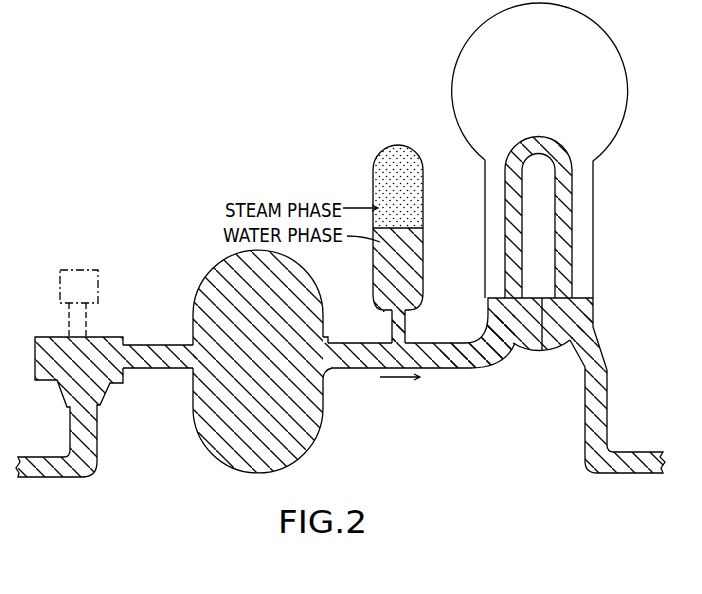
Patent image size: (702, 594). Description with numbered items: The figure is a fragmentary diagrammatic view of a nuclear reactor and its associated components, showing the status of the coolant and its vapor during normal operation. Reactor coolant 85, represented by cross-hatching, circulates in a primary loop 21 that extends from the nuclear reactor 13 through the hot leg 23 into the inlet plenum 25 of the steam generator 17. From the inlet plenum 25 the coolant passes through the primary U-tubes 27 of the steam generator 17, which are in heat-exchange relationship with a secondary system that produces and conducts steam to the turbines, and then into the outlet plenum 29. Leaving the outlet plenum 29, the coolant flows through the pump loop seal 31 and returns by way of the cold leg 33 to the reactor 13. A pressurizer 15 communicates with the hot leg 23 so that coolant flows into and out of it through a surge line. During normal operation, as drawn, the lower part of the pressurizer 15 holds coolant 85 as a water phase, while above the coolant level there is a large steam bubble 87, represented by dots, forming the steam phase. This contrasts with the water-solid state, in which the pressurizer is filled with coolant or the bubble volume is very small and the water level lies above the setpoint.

The nuclear reactor 13 is at (310, 283).
The pressurizer 15 is at (456, 197).
The steam generator 17 is at (638, 196).
The primary loop 21 is at (362, 417).
The hot leg 23 is at (375, 342).
The inlet plenum 25 is at (502, 312).
The primary U-tubes 27 is at (558, 148).
The outlet plenum 29 is at (587, 313).
The pump loop seal 31 is at (47, 455).
The cold leg 33 is at (160, 345).
The coolant 85 is at (462, 343).
The steam bubble 87 is at (375, 180).